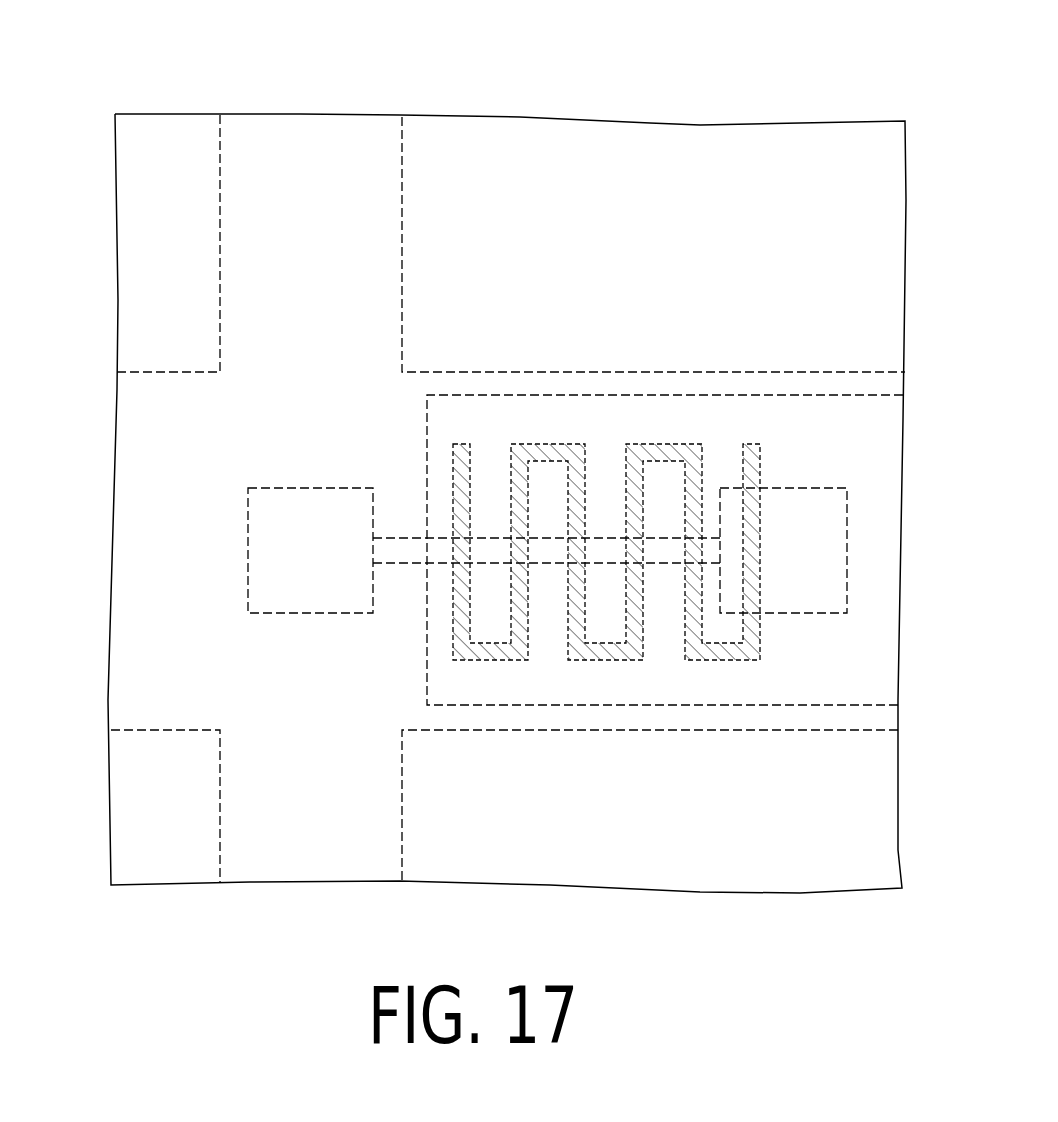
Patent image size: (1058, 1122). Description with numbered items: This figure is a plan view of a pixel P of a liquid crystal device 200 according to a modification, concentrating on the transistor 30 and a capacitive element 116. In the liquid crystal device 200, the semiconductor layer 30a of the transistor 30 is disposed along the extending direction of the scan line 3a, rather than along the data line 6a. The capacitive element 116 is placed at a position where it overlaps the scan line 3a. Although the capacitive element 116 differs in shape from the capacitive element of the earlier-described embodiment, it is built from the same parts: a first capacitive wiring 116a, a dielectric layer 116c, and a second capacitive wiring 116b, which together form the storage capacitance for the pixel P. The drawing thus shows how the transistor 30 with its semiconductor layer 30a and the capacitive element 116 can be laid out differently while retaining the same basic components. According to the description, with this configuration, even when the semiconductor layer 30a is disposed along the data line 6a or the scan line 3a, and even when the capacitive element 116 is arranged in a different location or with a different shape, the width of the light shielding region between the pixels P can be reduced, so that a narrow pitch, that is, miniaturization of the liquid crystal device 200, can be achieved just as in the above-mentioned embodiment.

The liquid crystal device 200 is at (471, 450).
The pixel P is at (601, 147).
The scan line 3a is at (137, 548).
The data line 6a is at (307, 145).
The transistor 30 is at (332, 509).
The semiconductor layer 30a is at (302, 472).
The capacitive element 116 is at (665, 470).
The first capacitive wiring 116a is at (606, 472).
The second capacitive wiring 116b is at (787, 420).
The dielectric layer 116c is at (665, 495).